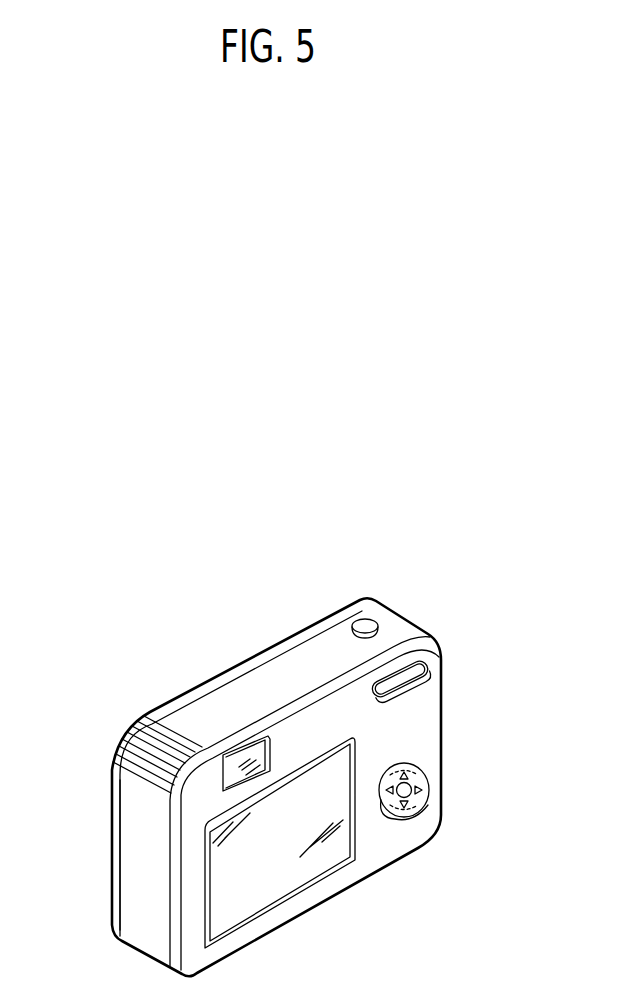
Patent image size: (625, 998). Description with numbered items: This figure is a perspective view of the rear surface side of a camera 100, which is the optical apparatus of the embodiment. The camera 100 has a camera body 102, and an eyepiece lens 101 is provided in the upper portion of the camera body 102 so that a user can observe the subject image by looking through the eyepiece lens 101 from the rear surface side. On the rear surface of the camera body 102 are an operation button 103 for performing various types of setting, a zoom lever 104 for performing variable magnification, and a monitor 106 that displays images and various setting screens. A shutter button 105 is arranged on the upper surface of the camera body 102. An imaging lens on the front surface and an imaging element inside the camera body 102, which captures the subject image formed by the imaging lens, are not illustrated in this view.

The camera 100 is at (179, 592).
The eyepiece lens 101 is at (237, 765).
The camera body 102 is at (132, 864).
The operation button 103 is at (419, 792).
The zoom lever 104 is at (433, 671).
The shutter button 105 is at (366, 620).
The monitor 106 is at (313, 867).